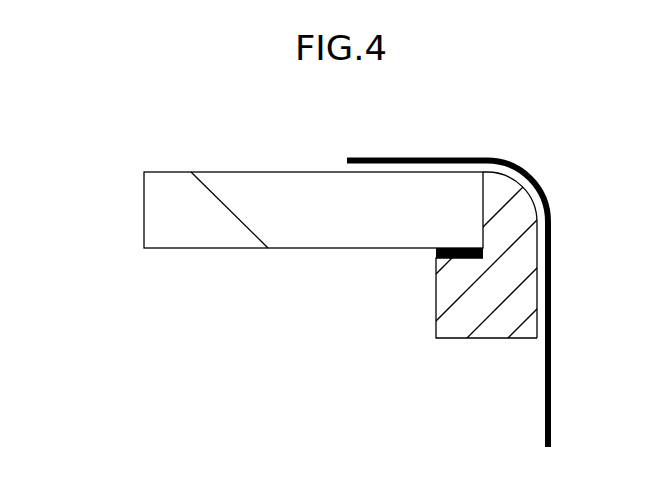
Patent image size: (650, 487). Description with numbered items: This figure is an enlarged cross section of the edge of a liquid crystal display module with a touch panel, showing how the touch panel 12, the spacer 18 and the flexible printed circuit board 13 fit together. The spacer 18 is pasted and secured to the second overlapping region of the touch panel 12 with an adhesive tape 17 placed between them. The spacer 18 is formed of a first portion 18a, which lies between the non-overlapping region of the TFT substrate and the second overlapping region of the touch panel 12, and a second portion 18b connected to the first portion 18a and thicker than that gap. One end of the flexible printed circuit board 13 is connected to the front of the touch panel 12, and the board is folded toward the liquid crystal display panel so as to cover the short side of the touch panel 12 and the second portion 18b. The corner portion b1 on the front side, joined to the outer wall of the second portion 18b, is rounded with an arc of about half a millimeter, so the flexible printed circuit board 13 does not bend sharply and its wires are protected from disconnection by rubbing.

The touch panel 12 is at (173, 199).
The flexible printed circuit board 13 is at (546, 200).
The adhesive tape 17 is at (435, 255).
The spacer 18 is at (467, 293).
The first portion 18a is at (480, 275).
The second portion 18b is at (347, 337).
The corner portion b1 is at (443, 152).